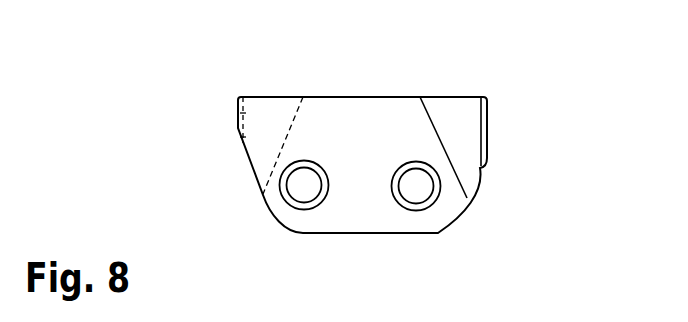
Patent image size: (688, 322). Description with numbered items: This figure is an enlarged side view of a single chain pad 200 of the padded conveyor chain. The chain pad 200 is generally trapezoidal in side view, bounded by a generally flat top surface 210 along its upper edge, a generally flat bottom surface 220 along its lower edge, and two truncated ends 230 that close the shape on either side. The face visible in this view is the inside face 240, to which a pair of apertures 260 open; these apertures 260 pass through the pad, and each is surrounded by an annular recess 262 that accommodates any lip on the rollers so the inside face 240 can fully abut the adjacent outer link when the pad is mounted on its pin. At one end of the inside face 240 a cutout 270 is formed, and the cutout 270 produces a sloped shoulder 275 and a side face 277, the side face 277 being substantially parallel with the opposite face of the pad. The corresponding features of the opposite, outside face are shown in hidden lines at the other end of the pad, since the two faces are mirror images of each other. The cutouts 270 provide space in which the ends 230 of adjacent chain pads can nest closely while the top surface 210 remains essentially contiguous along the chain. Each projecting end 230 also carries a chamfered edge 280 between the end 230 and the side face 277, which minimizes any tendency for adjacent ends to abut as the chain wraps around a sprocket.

The chain pad 200 is at (352, 69).
The top surface 210 is at (392, 98).
The bottom surface 220 is at (310, 233).
The truncated end 230 is at (237, 127).
The inside face 240 is at (370, 160).
The aperture 260 is at (416, 186).
The annular recess 262 is at (436, 203).
The cutout 270 is at (264, 160).
The sloped shoulder 275 is at (292, 120).
The side face 277 is at (258, 135).
The chamfered edge 280 is at (236, 113).